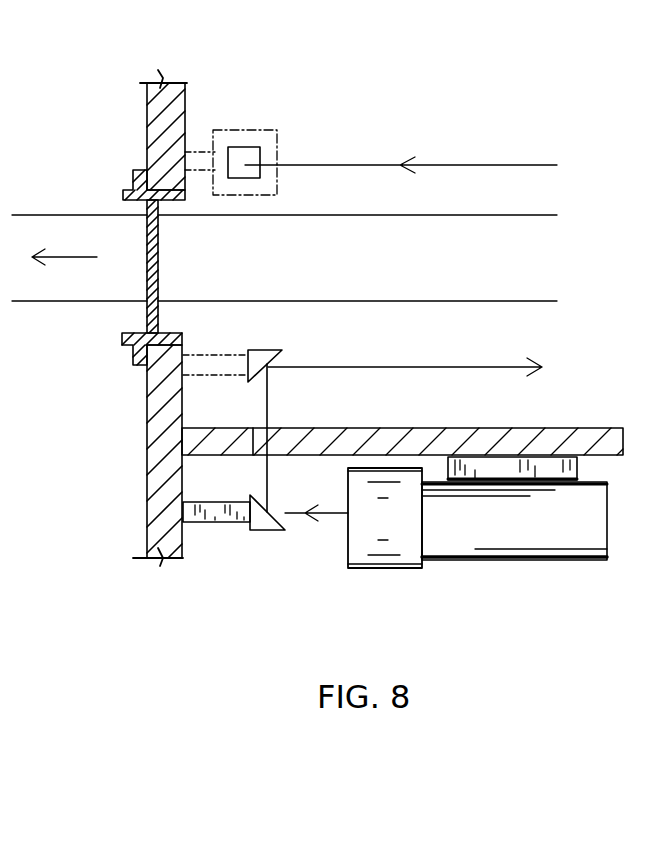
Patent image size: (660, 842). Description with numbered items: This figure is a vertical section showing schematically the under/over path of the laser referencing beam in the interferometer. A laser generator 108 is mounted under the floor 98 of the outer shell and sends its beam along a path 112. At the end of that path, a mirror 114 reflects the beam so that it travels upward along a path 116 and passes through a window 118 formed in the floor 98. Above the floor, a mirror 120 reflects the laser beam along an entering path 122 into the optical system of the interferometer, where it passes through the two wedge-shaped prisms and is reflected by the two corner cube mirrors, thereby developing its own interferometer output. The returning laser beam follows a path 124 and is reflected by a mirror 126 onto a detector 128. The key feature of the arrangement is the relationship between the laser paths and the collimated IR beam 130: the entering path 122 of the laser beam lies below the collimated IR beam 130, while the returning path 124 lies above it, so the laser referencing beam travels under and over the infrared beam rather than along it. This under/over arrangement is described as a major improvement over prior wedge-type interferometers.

The floor 98 is at (545, 438).
The laser generator 108 is at (458, 562).
The path 112 is at (308, 520).
The mirror 114 is at (265, 533).
The path 116 is at (270, 400).
The window 118 is at (273, 445).
The mirror 120 is at (262, 360).
The path 122 is at (402, 368).
The path 124 is at (345, 165).
The mirror 126 is at (237, 148).
The detector 128 is at (263, 130).
The collimated IR beam 130 is at (333, 217).